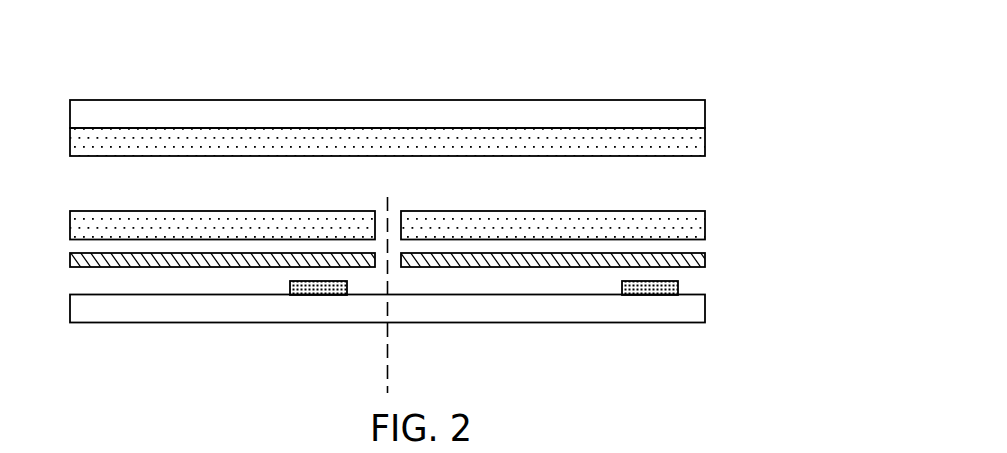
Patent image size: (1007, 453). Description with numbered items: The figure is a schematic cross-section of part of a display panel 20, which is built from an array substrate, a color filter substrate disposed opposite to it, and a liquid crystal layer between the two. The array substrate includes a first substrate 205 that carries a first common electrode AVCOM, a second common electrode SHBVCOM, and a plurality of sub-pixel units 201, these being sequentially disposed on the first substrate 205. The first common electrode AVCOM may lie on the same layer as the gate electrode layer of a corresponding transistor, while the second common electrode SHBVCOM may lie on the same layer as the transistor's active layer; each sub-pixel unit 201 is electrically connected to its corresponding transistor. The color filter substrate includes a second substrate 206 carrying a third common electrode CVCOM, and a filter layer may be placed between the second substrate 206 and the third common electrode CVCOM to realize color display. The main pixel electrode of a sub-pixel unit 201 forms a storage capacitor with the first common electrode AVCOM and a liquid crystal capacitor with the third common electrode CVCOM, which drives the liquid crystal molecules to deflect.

The display panel 20 is at (100, 73).
The second substrate 206 is at (682, 117).
The third common electrode CVCOM is at (682, 145).
The sub-pixel units 201 is at (682, 228).
The second common electrode SHBVCOM is at (142, 262).
The first common electrode AVCOM is at (318, 290).
The first substrate 205 is at (682, 314).